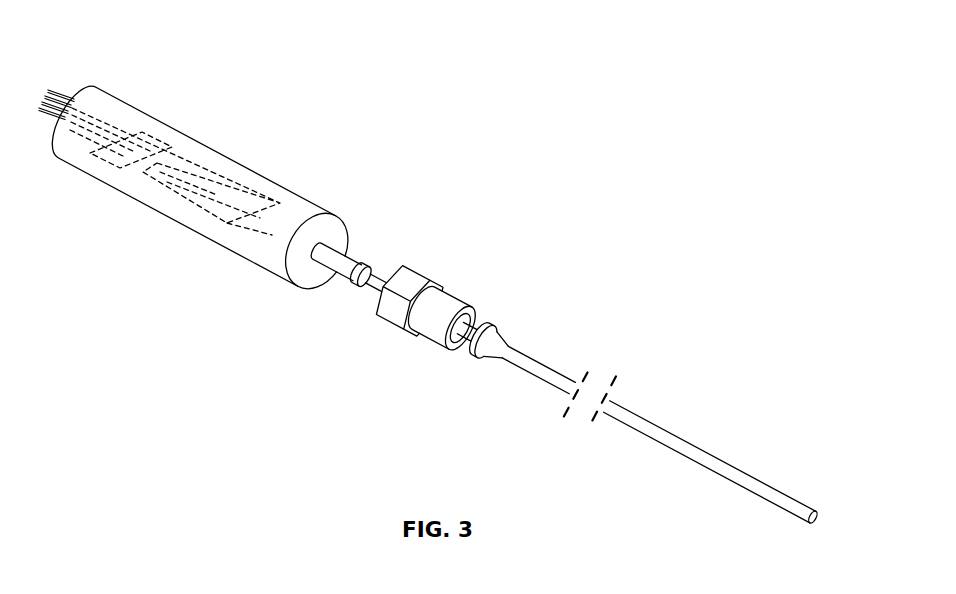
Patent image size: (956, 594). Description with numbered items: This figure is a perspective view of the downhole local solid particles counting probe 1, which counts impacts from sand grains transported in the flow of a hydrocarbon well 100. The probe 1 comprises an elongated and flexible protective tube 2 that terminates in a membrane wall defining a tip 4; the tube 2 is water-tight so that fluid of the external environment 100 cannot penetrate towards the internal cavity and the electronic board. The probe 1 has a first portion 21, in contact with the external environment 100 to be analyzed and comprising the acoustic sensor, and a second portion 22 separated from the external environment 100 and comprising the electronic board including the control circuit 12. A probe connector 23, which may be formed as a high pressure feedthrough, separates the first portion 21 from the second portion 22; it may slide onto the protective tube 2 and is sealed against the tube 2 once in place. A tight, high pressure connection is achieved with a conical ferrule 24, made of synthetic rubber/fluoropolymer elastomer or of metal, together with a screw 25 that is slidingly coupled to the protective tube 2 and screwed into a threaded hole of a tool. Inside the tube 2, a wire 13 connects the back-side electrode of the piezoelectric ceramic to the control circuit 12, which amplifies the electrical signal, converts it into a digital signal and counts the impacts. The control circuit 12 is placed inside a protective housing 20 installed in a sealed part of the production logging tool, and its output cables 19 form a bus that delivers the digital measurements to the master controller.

The hydrocarbon well 100 is at (464, 283).
The downhole local solid particles counting probe 1 is at (430, 282).
The second portion 22 is at (214, 184).
The output cables 19 is at (58, 100).
The protective housing 20 is at (208, 148).
The control circuit 12 is at (163, 180).
The wire 13 is at (274, 230).
The screw 25 is at (431, 332).
The probe connector 23 is at (460, 291).
The conical ferrule 24 is at (494, 339).
The protective tube 2 is at (657, 424).
The first portion 21 is at (641, 401).
The tip 4 is at (815, 505).